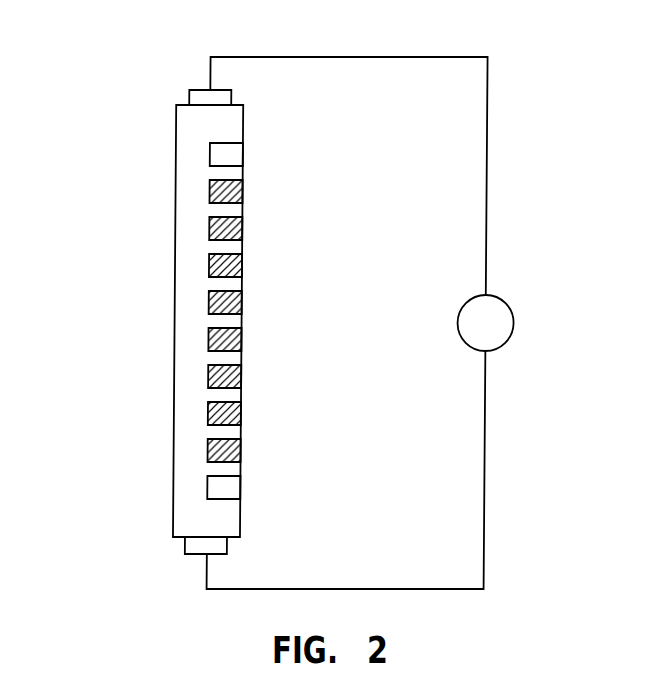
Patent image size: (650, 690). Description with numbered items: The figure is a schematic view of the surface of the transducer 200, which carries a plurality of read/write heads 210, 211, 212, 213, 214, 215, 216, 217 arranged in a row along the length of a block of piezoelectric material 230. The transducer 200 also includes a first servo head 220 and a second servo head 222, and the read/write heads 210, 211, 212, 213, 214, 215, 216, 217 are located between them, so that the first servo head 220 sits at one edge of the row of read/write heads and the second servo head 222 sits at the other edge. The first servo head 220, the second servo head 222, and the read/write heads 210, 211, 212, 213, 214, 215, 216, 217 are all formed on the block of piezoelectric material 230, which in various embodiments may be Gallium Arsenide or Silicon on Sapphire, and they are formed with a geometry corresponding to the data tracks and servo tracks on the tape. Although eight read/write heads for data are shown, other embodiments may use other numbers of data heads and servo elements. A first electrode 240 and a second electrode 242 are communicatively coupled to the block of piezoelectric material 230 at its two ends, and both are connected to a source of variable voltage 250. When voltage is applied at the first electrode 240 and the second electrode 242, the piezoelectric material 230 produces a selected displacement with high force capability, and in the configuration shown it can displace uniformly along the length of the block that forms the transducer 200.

The transducer 200 is at (92, 72).
The read/write head 210 is at (246, 192).
The read/write head 211 is at (246, 229).
The read/write head 212 is at (246, 266).
The read/write head 213 is at (246, 303).
The read/write head 214 is at (246, 340).
The read/write head 215 is at (246, 377).
The read/write head 216 is at (246, 414).
The read/write head 217 is at (246, 451).
The first servo head 220 is at (246, 155).
The second servo head 222 is at (246, 488).
The piezoelectric material 230 is at (177, 320).
The first electrode 240 is at (200, 88).
The second electrode 242 is at (197, 555).
The source of variable voltage 250 is at (508, 308).